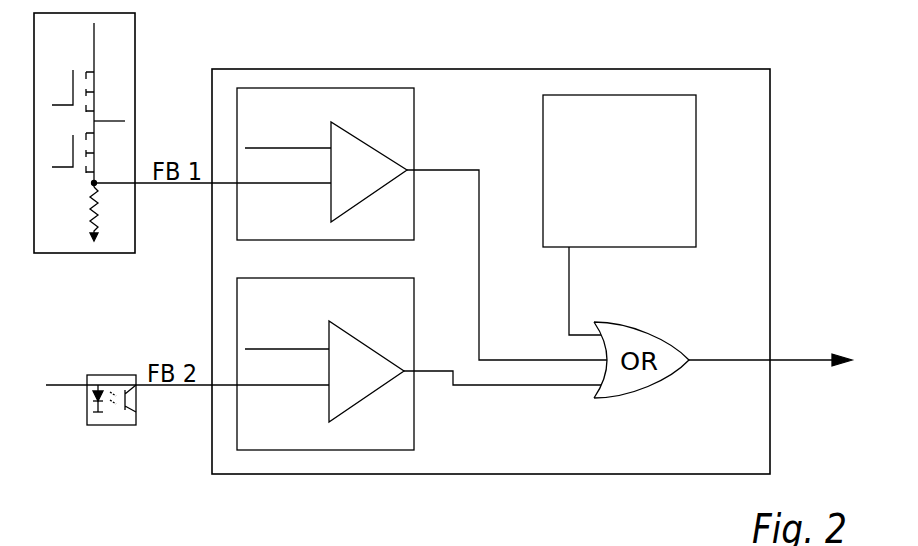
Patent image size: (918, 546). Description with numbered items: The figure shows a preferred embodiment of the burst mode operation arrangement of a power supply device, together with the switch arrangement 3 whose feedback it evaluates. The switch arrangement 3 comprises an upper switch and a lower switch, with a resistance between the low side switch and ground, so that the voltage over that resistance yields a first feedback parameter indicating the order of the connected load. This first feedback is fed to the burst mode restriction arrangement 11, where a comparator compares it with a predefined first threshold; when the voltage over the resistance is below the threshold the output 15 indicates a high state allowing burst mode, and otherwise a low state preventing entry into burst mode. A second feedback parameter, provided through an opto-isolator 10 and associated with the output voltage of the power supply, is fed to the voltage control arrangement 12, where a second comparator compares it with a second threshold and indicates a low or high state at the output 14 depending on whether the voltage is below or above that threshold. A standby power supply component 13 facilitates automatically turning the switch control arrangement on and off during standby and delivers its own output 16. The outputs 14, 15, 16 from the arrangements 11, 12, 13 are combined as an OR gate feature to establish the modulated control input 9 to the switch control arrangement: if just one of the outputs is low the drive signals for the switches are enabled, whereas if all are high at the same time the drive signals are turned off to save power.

The switch arrangement 3 is at (73, 253).
The modulated control input 9 is at (815, 359).
The opto-isolator 10 is at (108, 425).
The burst mode restriction arrangement 11 is at (336, 116).
The voltage control arrangement 12 is at (336, 308).
The standby power supply arrangement 13 is at (634, 148).
The output 14 is at (528, 385).
The output 15 is at (443, 171).
The output 16 is at (568, 288).